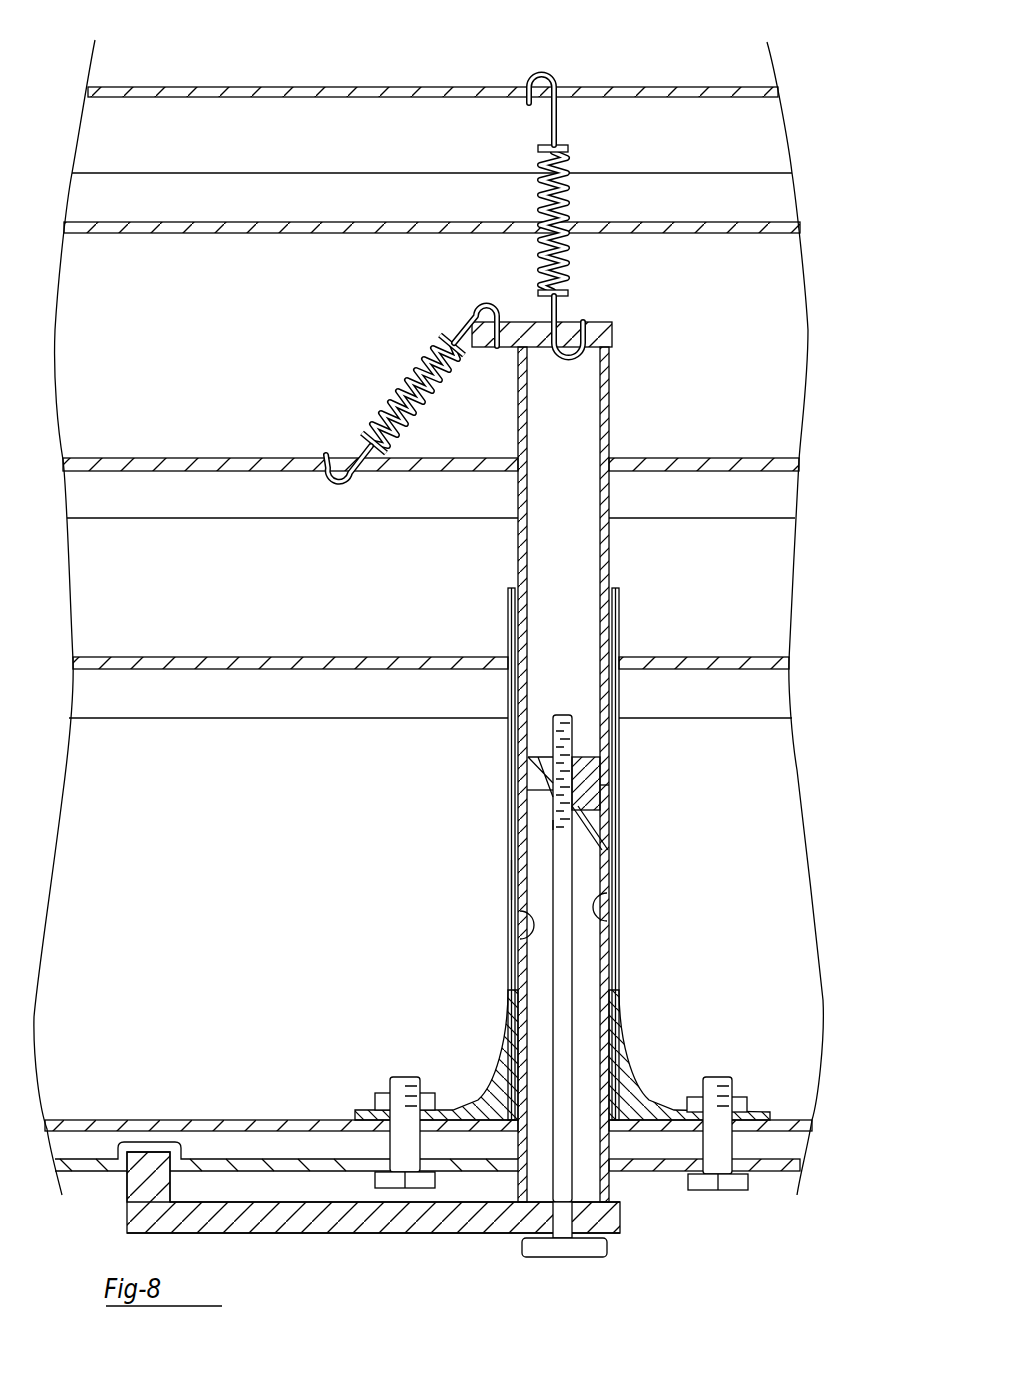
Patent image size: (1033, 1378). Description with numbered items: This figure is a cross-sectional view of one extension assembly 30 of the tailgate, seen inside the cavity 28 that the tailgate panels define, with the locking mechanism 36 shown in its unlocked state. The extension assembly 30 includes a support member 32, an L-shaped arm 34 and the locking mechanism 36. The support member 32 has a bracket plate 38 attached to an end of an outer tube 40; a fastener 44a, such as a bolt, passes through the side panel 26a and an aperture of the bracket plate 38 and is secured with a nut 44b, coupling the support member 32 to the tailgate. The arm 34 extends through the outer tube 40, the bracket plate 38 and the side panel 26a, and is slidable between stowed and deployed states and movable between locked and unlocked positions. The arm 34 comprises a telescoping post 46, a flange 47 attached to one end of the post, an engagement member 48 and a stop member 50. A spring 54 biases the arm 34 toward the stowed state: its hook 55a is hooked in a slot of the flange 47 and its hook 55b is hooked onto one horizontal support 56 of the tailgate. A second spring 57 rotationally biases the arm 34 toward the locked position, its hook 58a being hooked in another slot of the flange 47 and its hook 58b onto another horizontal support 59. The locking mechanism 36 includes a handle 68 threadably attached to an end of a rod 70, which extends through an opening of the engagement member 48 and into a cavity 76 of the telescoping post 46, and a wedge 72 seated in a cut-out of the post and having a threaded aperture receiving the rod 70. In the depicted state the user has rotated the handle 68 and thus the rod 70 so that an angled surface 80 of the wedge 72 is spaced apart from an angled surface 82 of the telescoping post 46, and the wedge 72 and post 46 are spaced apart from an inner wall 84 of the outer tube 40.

The side panel 26a is at (660, 1172).
The cavity 28 is at (778, 770).
The extension assembly 30 is at (458, 828).
The support member 32 is at (468, 1058).
The L-shaped arm 34 is at (378, 1244).
The locking mechanism 36 is at (536, 793).
The bracket plate 38 is at (762, 1118).
The outer tube 40 is at (610, 795).
The fastener 44a is at (378, 1180).
The nut 44b is at (378, 1096).
The telescoping post 46 is at (520, 556).
The flange 47 is at (612, 325).
The engagement member 48 is at (427, 1222).
The stop member 50 is at (148, 1152).
The spring 54 is at (518, 197).
The hook 55a is at (578, 362).
The hook 55b is at (558, 102).
The horizontal support 56 is at (706, 88).
The spring 57 is at (382, 370).
The hook 58a is at (458, 326).
The hook 58b is at (326, 458).
The horizontal support 59 is at (133, 458).
The handle 68 is at (603, 1250).
The rod 70 is at (565, 845).
The wedge 72 is at (600, 770).
The cavity 76 is at (535, 887).
The angled surface 80 is at (548, 790).
The angled surface 82 is at (600, 826).
The inner wall 84 is at (522, 948).